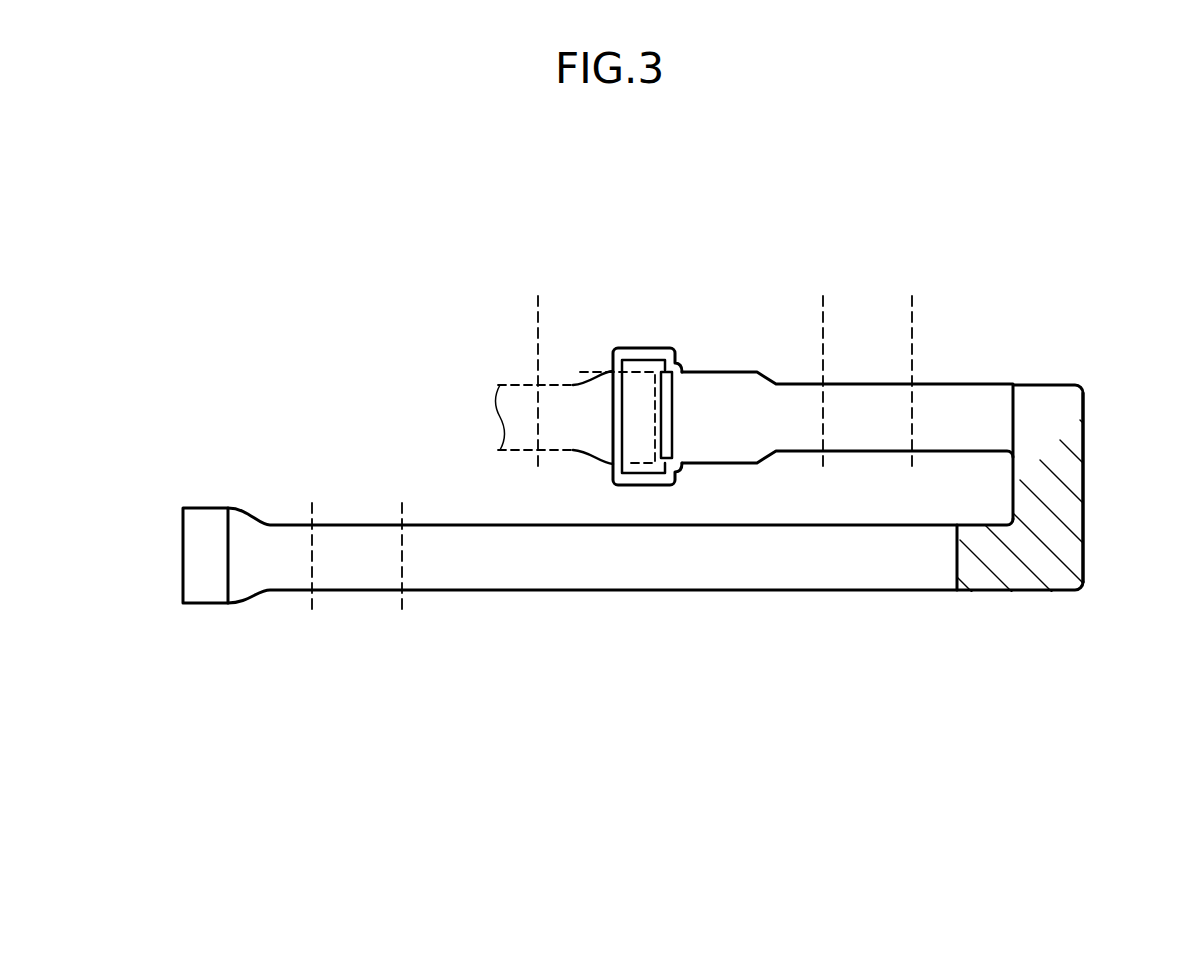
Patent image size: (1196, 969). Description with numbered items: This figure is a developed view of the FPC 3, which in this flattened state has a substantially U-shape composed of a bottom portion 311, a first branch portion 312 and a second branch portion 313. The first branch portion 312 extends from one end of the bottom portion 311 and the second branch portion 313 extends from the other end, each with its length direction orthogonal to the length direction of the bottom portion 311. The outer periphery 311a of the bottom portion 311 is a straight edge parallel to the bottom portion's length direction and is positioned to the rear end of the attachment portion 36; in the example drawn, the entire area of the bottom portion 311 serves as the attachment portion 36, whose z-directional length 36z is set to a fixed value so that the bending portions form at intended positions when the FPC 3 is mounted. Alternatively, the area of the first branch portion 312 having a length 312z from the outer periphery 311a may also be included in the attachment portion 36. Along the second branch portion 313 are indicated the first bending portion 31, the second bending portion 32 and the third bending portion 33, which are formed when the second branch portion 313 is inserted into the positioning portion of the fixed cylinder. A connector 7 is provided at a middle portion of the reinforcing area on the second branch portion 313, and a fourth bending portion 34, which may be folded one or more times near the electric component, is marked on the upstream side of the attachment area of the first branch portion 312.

The FPC 3 is at (626, 162).
The connector 7 is at (640, 418).
The first bending portion 31 is at (909, 367).
The second bending portion 32 is at (824, 367).
The third bending portion 33 is at (534, 366).
The fourth bending portion 34 is at (402, 494).
The attachment portion 36 is at (1028, 592).
The z-directional length of the attachment portion 36z is at (1083, 375).
The bottom portion 311 is at (1028, 632).
The outer periphery of the bottom portion 311a is at (1084, 438).
The first branch portion 312 is at (812, 591).
The length of the first branch portion area 312z is at (957, 597).
The second branch portion 313 is at (874, 397).